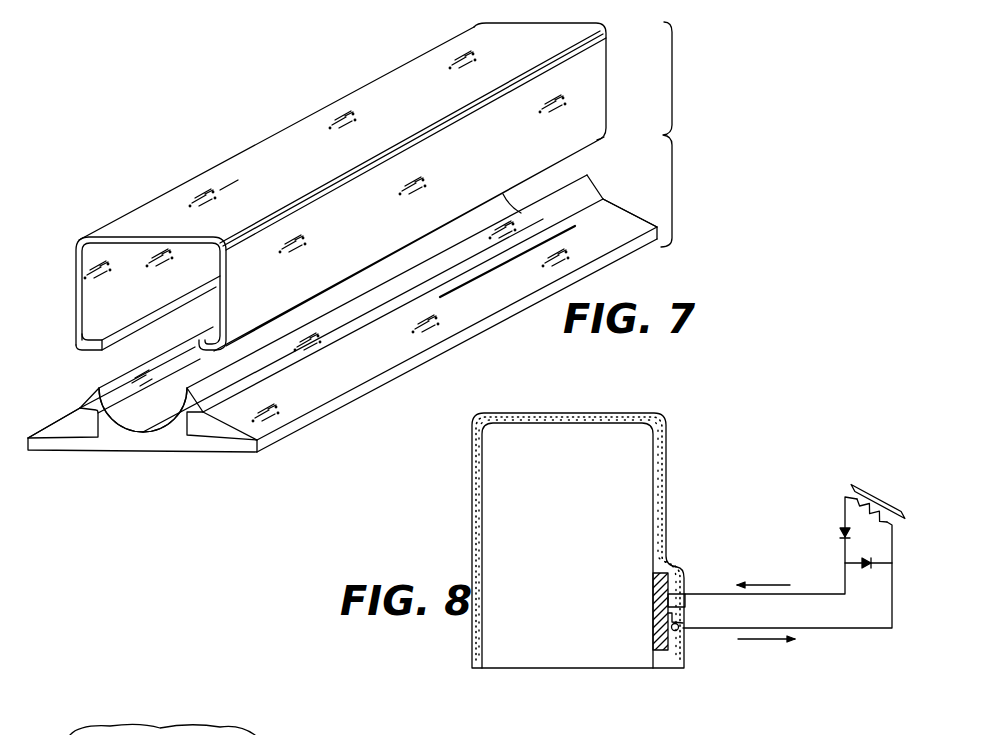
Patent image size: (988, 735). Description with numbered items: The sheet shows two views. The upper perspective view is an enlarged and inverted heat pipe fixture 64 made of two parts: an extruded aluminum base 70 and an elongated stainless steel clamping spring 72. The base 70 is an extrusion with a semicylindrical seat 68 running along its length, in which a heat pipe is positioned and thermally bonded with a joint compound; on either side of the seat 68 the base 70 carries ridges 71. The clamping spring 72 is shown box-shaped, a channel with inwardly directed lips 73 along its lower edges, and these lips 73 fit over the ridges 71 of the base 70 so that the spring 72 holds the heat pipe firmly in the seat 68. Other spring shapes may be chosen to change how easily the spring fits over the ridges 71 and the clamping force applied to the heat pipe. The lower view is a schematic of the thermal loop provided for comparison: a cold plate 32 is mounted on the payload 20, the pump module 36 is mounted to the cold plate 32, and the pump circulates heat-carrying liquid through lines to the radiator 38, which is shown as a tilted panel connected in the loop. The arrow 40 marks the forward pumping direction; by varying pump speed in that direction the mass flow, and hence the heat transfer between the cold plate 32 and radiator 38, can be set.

In FIG. 8, the payload 20 is at (543, 670).
In FIG. 8, the cold plate 32 is at (661, 653).
In FIG. 8, the pump module 36 is at (690, 637).
In FIG. 8, the radiator 38 is at (880, 494).
In FIG. 8, the arrow indicating forward direction 40 is at (765, 583).
In FIG. 7, the heat pipe fixture 64 is at (650, 134).
In FIG. 7, the semicylindrical seat 68 is at (121, 395).
In FIG. 7, the extruded aluminum base 70 is at (342, 313).
In FIG. 7, the ridges 71 is at (80, 408).
In FIG. 7, the clamping spring 72 is at (364, 187).
In FIG. 7, the inwardly directed lips 73 is at (142, 322).